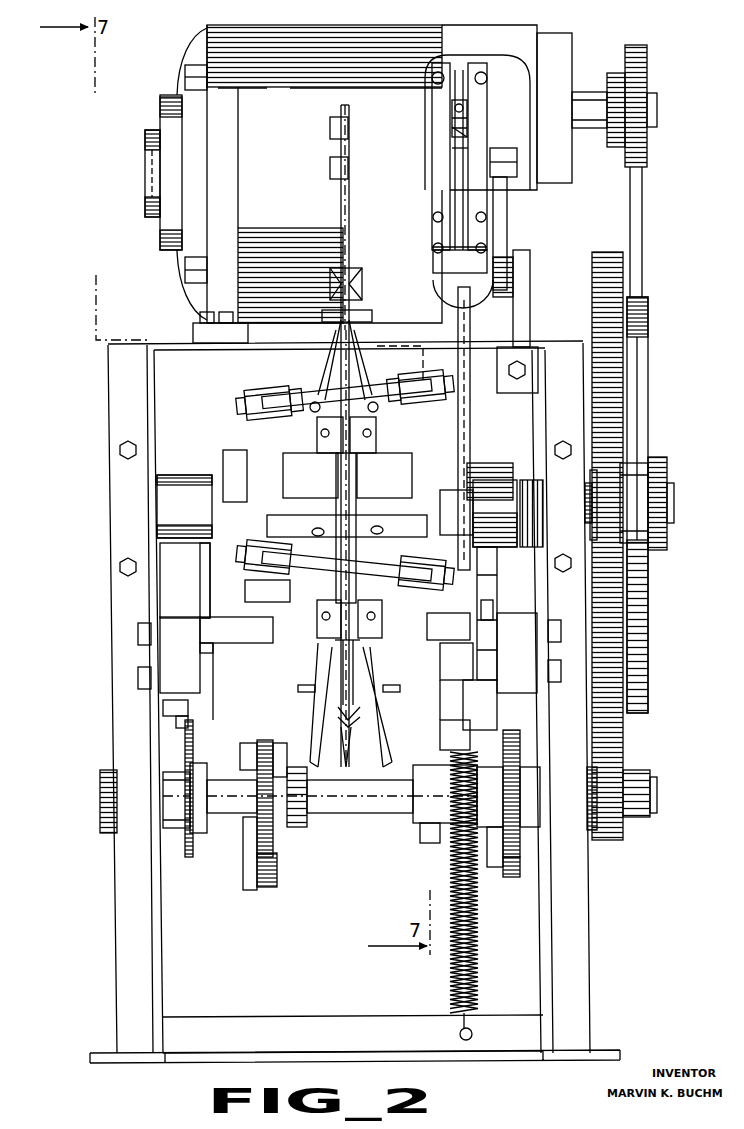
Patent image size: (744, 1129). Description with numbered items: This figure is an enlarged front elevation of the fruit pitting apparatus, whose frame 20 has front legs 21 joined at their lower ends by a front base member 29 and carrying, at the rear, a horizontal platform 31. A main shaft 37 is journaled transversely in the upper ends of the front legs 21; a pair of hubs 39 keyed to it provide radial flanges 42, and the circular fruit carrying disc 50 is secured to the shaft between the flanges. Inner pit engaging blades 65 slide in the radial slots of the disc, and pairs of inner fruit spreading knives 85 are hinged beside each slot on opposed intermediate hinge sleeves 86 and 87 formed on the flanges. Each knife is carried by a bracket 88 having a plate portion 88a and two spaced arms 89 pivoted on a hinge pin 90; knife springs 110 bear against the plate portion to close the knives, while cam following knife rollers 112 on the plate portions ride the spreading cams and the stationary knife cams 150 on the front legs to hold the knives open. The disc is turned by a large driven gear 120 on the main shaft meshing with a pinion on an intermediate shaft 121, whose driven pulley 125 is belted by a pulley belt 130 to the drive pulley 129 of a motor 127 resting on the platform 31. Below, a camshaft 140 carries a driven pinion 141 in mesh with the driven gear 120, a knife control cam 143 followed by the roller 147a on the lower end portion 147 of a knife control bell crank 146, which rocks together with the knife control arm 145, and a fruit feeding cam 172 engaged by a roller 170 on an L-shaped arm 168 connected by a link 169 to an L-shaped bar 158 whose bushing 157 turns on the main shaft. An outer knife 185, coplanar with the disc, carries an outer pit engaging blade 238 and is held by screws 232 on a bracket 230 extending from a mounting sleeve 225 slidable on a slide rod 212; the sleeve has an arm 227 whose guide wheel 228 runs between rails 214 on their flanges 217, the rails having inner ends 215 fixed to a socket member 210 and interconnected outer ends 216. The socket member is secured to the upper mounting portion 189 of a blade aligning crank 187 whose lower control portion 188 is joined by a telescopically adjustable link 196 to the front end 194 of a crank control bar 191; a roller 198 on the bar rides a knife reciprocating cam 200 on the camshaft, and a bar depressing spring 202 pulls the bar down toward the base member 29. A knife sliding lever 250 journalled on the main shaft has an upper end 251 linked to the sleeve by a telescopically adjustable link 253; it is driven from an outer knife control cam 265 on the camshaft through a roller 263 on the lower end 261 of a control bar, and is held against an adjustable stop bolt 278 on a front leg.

The frame 20 is at (110, 604).
The front legs 21 is at (128, 968).
The front base member 29 is at (337, 1041).
The platform 31 is at (295, 343).
The main shaft 37 is at (658, 490).
The hubs 39 is at (410, 516).
The flanges 42 is at (364, 500).
The fruit carrying disc 50 is at (336, 330).
The inner pit engaging blades 65 is at (341, 737).
The inner fruit spreading knives 85 is at (412, 612).
The intermediate hinge sleeve 86 is at (316, 478).
The intermediate hinge sleeve 87 is at (380, 612).
The bracket 88 is at (398, 385).
The plate portion 88a is at (280, 585).
The arms 89 is at (362, 530).
The hinge pin 90 is at (318, 405).
The knife springs 110 is at (280, 425).
The cam following knife rollers 112 is at (262, 390).
The driven gear 120 is at (606, 378).
The intermediate shaft 121 is at (675, 497).
The driven pulley 125 is at (638, 395).
The motor 127 is at (285, 124).
The drive pulley 129 is at (643, 82).
The pulley belt 130 is at (640, 212).
The camshaft 140 is at (652, 785).
The driven pinion 141 is at (608, 790).
The knife control cam 143 is at (265, 840).
The knife control arm 145 is at (415, 680).
The knife control bell crank 146 is at (265, 688).
The lower end portion 147 is at (242, 845).
The roller 147a is at (265, 880).
The stationary knife cams 150 is at (225, 630).
The bushing 157 is at (160, 497).
The L-shaped bar 158 is at (235, 462).
The L-shaped arm 168 is at (162, 705).
The link 169 is at (207, 578).
The roller 170 is at (176, 720).
The fruit feeding cam 172 is at (196, 845).
The outer knife 185 is at (338, 210).
The blade aligning crank 187 is at (470, 380).
The lower control portion 188 is at (490, 500).
The upper mounting portion 189 is at (458, 335).
The crank control bar 191 is at (465, 700).
The front end 194 is at (483, 708).
The telescopically adjustable link 196 is at (487, 665).
The roller 198 is at (380, 689).
The knife reciprocating cam 200 is at (450, 800).
The bar depressing spring 202 is at (455, 968).
The socket member 210 is at (447, 300).
The slide rod 212 is at (458, 192).
The rails 214 is at (493, 100).
The inner ends 215 is at (475, 244).
The outer ends 216 is at (500, 85).
The flanges 217 is at (442, 164).
The mounting sleeve 225 is at (457, 148).
The arm 227 is at (450, 130).
The guide wheel 228 is at (452, 118).
The bracket 230 is at (365, 112).
The screws 232 is at (330, 168).
The outer pit engaging blade 238 is at (326, 270).
The knife sliding lever 250 is at (517, 600).
The upper end 251 is at (520, 297).
The telescopically adjustable link 253 is at (505, 218).
The lower end 261 is at (498, 905).
The roller 263 is at (503, 878).
The outer knife control cam 265 is at (522, 832).
The adjustable stop bolt 278 is at (525, 345).